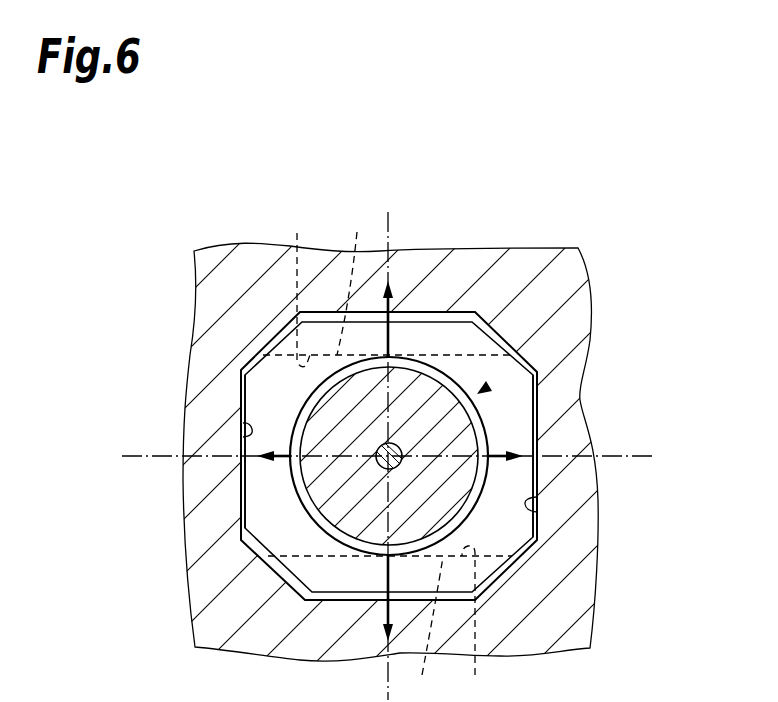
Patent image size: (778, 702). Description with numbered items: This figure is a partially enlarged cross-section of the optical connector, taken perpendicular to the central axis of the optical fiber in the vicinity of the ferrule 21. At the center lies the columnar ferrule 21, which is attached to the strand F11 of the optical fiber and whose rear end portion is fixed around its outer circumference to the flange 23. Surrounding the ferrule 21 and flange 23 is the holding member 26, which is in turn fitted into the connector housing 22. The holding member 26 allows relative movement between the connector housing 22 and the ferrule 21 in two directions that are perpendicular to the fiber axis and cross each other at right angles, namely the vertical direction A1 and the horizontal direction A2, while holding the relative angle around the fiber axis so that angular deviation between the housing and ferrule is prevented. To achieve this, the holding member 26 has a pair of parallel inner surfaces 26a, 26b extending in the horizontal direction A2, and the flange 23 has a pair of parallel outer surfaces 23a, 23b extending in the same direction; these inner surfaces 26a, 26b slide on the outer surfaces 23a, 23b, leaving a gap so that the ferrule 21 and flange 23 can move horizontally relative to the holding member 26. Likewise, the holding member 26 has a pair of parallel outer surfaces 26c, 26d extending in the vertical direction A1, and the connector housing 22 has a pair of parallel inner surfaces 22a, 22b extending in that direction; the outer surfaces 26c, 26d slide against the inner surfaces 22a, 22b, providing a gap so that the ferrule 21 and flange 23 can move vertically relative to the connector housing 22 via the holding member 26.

The ferrule 21 is at (318, 492).
The connector housing 22 is at (228, 270).
The inner surface 22a is at (540, 513).
The inner surface 22b is at (243, 436).
The flange 23 is at (482, 390).
The outer surface 23a is at (358, 280).
The outer surface 23b is at (425, 629).
The holding member 26 is at (265, 393).
The inner surface 26a is at (387, 286).
The inner surface 26b is at (390, 624).
The outer surface 26c is at (540, 481).
The outer surface 26d is at (243, 403).
The vertical direction A1 is at (393, 300).
The horizontal direction A2 is at (498, 450).
The strand F11 is at (380, 468).